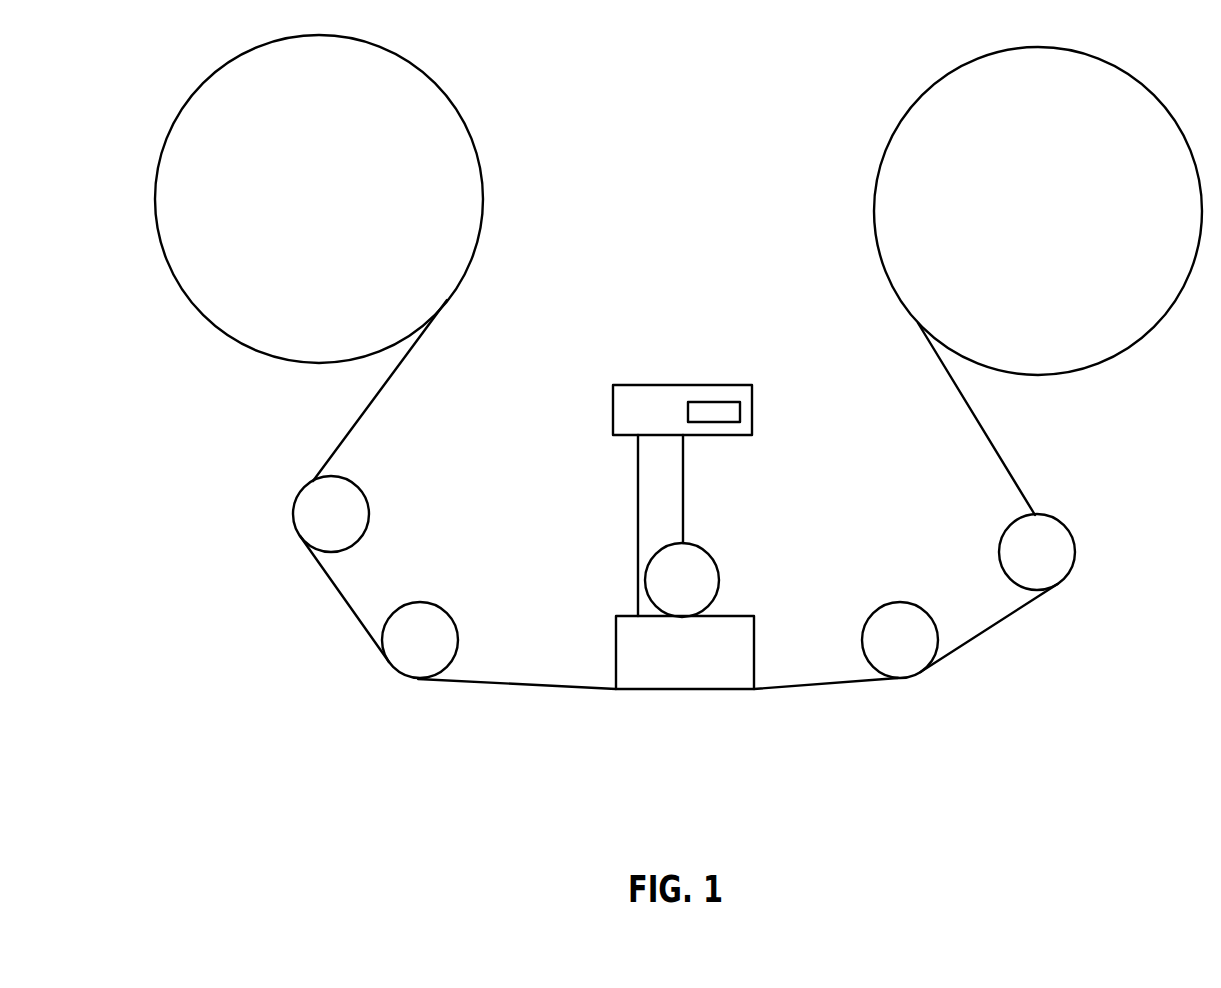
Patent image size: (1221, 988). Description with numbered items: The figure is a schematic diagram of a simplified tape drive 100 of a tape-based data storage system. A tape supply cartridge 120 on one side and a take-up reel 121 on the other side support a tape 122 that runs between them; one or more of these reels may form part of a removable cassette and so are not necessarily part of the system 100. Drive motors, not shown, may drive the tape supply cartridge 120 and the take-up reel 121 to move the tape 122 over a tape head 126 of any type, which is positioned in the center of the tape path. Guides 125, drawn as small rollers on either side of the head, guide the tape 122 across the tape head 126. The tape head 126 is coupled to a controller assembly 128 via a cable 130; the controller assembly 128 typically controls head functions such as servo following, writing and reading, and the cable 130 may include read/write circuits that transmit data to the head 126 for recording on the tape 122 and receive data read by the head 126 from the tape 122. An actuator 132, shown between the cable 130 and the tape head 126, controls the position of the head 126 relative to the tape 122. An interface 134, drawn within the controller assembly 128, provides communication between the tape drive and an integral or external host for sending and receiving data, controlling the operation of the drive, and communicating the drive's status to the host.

The tape drive 100 is at (266, 424).
The tape supply cartridge 120 is at (480, 172).
The take-up reel 121 is at (1140, 343).
The tape 122 is at (523, 685).
The guides 125 is at (421, 601).
The tape head 126 is at (755, 648).
The controller assembly 128 is at (682, 385).
The cable 130 is at (637, 578).
The actuator 132 is at (707, 552).
The interface 134 is at (728, 385).